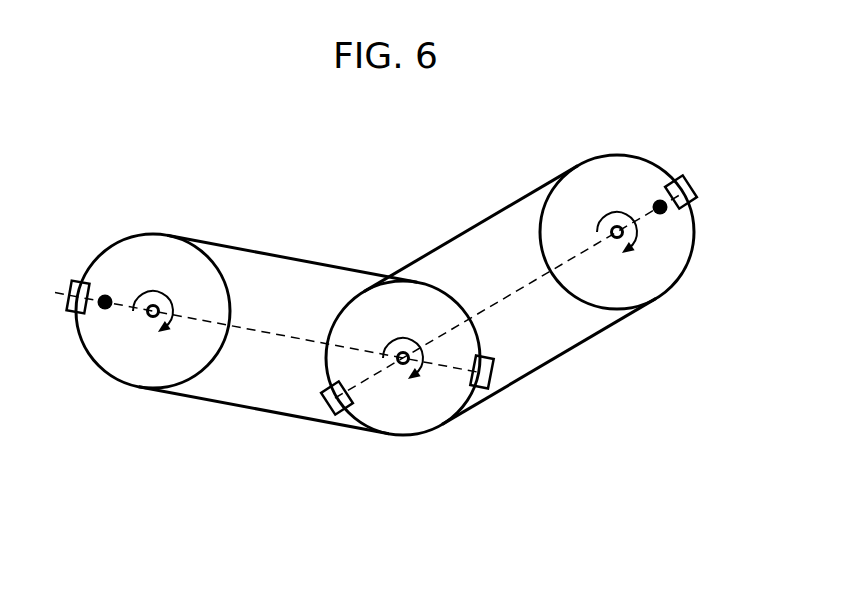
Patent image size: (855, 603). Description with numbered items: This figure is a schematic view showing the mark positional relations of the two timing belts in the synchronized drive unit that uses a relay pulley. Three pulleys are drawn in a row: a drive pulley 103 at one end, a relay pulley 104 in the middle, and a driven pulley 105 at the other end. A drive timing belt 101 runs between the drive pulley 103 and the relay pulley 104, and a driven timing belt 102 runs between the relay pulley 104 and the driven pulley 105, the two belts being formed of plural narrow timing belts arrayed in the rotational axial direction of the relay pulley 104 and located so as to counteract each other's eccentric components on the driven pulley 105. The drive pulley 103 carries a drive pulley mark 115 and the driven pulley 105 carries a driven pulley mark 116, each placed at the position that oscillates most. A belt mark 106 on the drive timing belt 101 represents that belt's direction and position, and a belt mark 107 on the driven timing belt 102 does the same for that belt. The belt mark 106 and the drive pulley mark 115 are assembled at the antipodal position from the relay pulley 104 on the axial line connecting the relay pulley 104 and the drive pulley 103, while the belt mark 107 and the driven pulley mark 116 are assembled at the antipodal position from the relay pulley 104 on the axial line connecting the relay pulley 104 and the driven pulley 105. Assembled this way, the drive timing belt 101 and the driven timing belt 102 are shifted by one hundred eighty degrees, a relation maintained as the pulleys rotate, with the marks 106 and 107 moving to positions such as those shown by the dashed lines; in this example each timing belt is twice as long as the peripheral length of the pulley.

The drive timing belt 101 is at (250, 408).
The driven timing belt 102 is at (567, 352).
The drive pulley 103 is at (226, 292).
The relay pulley 104 is at (470, 340).
The driven pulley 105 is at (617, 160).
The mark 106 is at (70, 283).
The mark 107 is at (325, 385).
The drive pulley mark 115 is at (108, 296).
The driven pulley mark 116 is at (654, 204).